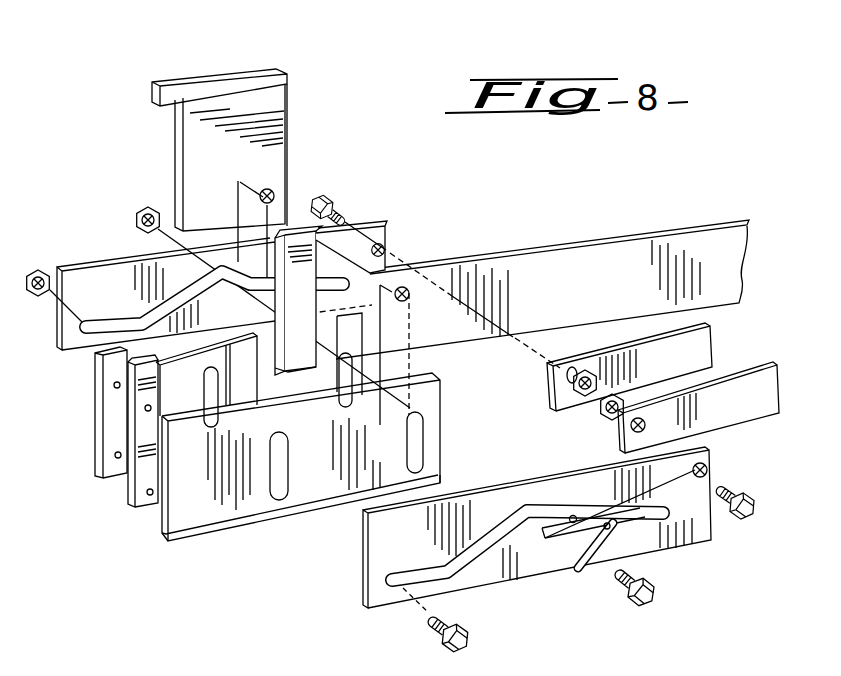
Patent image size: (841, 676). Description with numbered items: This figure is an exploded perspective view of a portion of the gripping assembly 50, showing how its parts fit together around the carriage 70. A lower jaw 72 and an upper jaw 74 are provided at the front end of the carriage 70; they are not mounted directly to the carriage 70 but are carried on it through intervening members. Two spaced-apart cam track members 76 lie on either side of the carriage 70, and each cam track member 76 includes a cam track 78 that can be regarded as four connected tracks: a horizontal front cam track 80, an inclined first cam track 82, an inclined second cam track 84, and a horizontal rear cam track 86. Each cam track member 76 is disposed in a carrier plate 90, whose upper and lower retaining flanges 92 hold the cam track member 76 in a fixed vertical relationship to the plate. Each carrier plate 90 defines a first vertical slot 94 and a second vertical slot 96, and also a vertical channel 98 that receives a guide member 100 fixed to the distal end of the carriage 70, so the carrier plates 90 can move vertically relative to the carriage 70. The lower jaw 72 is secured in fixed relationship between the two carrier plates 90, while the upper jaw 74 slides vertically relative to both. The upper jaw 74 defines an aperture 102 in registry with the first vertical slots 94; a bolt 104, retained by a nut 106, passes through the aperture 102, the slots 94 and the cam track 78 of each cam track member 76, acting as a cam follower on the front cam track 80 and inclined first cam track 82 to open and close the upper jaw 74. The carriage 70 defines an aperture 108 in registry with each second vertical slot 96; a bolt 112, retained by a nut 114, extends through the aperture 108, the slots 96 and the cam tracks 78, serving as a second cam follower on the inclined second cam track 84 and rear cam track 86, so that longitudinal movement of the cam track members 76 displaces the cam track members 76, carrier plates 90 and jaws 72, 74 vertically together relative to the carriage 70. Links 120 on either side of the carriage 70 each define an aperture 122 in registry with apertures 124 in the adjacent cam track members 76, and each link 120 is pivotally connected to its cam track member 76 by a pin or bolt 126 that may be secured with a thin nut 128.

The gripping assembly 50 is at (650, 208).
The carriage 70 is at (735, 297).
The lower jaw 72 is at (133, 400).
The upper jaw 74 is at (180, 92).
The cam track member 76 is at (104, 256).
The cam track 78 is at (117, 312).
The horizontal front cam track 80 is at (414, 570).
The inclined first cam track 82 is at (480, 513).
The inclined second cam track 84 is at (565, 523).
The horizontal rear cam track 86 is at (604, 530).
The carrier plate 90 is at (440, 408).
The retaining flange 92 is at (441, 490).
The first vertical slot 94 is at (203, 384).
The second vertical slot 96 is at (343, 363).
The vertical channel 98 is at (316, 394).
The guide member 100 is at (291, 230).
The aperture 102 is at (270, 190).
The bolt 104 is at (432, 626).
The nut 106 is at (34, 268).
The aperture 108 is at (404, 288).
The bolt 112 is at (620, 575).
The nut 114 is at (142, 206).
The link 120 is at (647, 352).
The aperture 122 is at (560, 358).
The aperture 124 is at (385, 248).
The pin or bolt 126 is at (345, 213).
The thin nut 128 is at (583, 400).